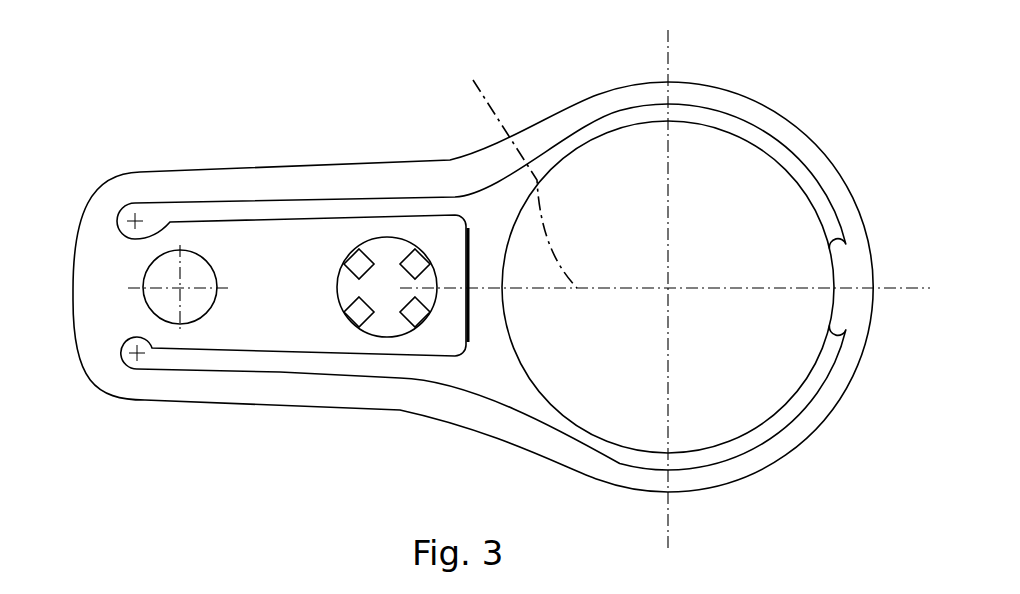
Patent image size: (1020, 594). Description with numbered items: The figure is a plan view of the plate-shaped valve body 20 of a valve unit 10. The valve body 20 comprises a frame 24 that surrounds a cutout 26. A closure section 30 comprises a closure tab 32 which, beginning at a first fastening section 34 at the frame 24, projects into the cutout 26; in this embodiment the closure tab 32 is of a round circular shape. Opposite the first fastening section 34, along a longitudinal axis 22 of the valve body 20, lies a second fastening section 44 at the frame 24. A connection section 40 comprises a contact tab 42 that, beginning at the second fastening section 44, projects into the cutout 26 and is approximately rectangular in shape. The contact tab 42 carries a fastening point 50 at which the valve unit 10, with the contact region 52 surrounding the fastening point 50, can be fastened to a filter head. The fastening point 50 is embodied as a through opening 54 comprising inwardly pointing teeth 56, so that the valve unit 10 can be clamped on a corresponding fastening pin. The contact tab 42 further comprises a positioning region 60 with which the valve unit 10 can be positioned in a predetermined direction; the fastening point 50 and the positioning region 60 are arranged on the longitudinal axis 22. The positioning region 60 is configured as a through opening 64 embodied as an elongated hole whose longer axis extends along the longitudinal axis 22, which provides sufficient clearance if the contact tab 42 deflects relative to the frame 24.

The valve unit 10 is at (237, 120).
The valve body 20 is at (292, 163).
The longitudinal axis 22 is at (517, 163).
The frame 24 is at (812, 142).
The cutout 26 is at (507, 373).
The closure section 30 is at (715, 267).
The closure tab 32 is at (537, 392).
The first fastening section 34 is at (853, 263).
The connection section 40 is at (288, 273).
The contact tab 42 is at (242, 353).
The second fastening section 44 is at (120, 283).
The fastening point 50 is at (366, 289).
The contact region 52 is at (337, 305).
The through opening 54 is at (387, 213).
The teeth 56 is at (415, 308).
The positioning region 60 is at (143, 300).
The through opening 64 is at (163, 315).